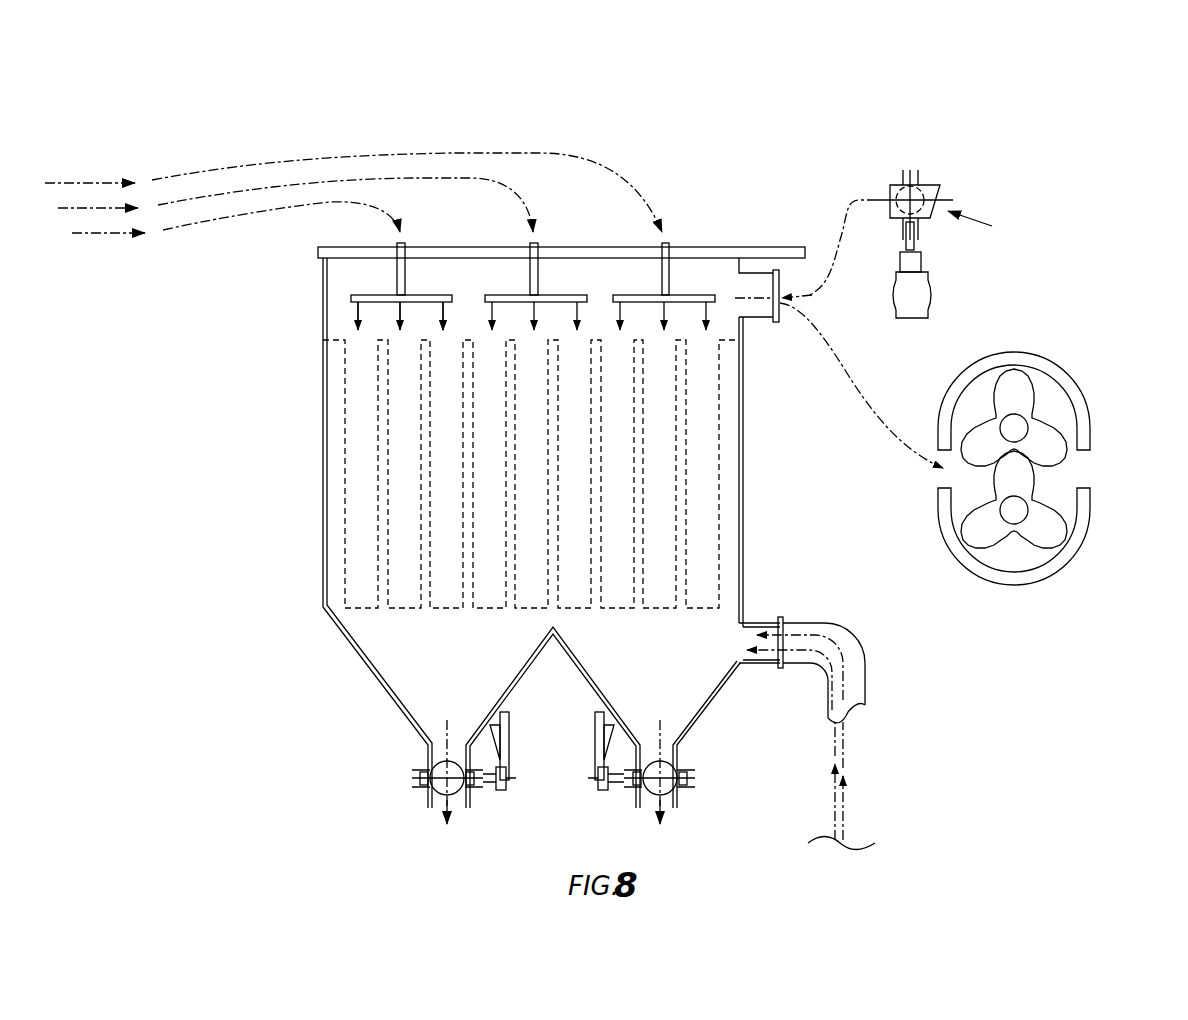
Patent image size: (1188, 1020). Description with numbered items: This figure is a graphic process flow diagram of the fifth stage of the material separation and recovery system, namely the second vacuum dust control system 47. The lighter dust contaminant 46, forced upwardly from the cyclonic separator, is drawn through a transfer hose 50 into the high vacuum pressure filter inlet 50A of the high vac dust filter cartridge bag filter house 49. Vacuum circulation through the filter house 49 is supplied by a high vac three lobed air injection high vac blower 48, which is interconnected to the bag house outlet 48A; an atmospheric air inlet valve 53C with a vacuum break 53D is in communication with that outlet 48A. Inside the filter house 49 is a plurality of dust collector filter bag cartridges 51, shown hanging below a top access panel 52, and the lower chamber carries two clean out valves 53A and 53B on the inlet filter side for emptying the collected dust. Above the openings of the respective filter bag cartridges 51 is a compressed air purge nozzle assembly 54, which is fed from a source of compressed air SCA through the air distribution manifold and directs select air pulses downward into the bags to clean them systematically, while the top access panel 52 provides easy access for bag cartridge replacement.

The source of compressed air SCA is at (200, 178).
The dust contaminant 46 is at (848, 735).
The second vacuum dust control system 47 is at (296, 434).
The high vac three lobed air injection high vac blower 48 is at (1068, 356).
The bag house outlet 48A is at (768, 308).
The high vac dust filter cartridge bag filter house 49 is at (745, 482).
The transfer hose 50 is at (848, 648).
The high vacuum pressure filter inlet 50A is at (756, 625).
The dust collector filter bag cartridges 51 is at (352, 518).
The top access panel 52 is at (678, 250).
The lower chamber clean out valve 53A is at (424, 743).
The lower chamber clean out valve 53B is at (672, 745).
The atmospheric air inlet valve 53C is at (940, 184).
The vacuum break 53D is at (926, 290).
The compressed air purge nozzle assembly 54 is at (548, 294).